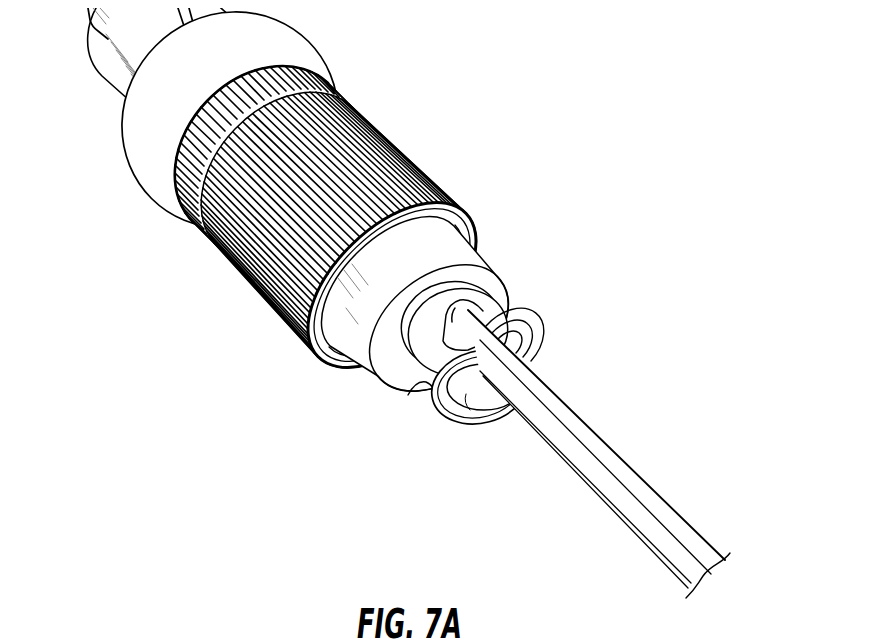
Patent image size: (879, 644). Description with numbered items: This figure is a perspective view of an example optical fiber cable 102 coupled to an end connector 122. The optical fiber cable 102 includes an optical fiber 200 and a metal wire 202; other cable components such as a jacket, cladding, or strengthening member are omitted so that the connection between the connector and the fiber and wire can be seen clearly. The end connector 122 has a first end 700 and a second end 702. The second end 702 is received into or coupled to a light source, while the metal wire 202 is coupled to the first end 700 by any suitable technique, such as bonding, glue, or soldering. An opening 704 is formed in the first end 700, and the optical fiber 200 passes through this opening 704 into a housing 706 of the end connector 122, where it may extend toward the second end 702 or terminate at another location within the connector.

The optical fiber cable 102 is at (643, 474).
The end connector 122 is at (403, 150).
The optical fiber 200 is at (593, 487).
The metal wire 202 is at (570, 407).
The first end 700 is at (400, 360).
The second end 702 is at (123, 69).
The opening 704 is at (475, 397).
The housing 706 is at (423, 250).